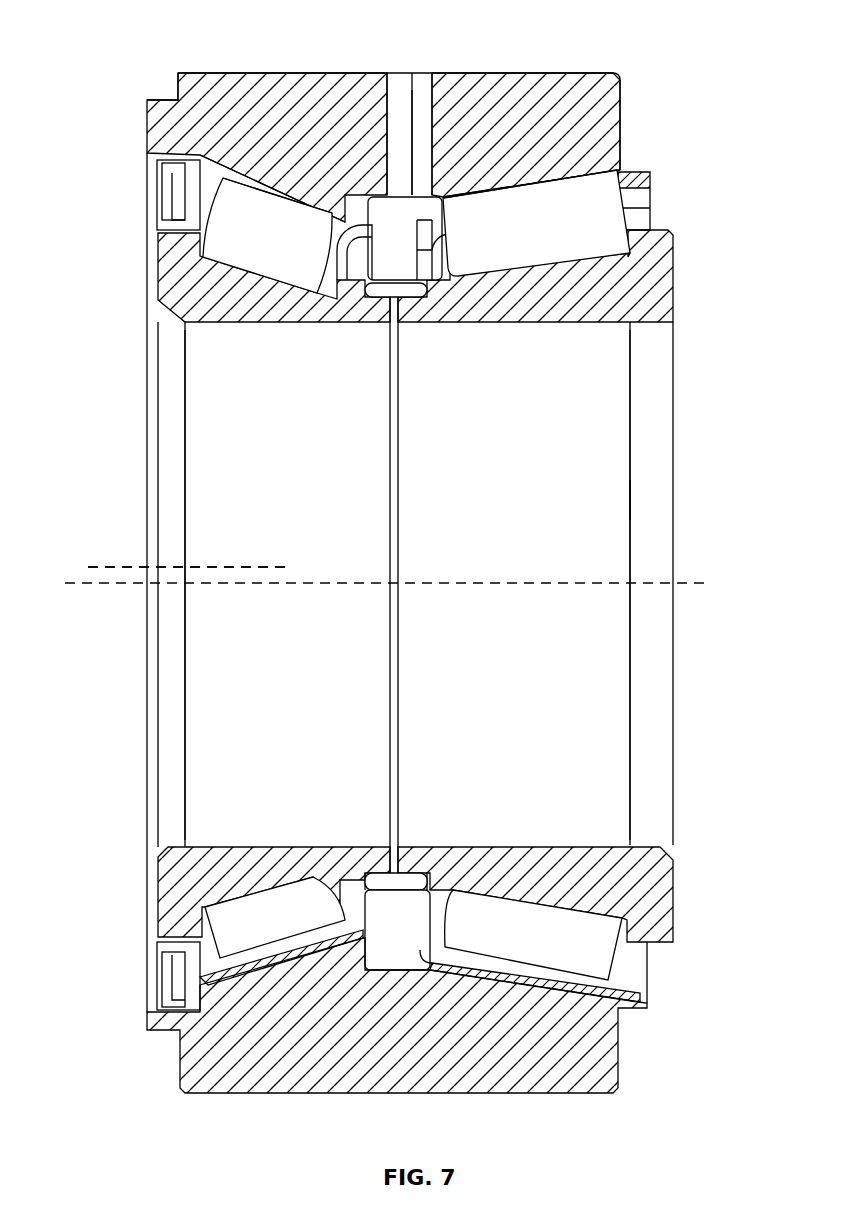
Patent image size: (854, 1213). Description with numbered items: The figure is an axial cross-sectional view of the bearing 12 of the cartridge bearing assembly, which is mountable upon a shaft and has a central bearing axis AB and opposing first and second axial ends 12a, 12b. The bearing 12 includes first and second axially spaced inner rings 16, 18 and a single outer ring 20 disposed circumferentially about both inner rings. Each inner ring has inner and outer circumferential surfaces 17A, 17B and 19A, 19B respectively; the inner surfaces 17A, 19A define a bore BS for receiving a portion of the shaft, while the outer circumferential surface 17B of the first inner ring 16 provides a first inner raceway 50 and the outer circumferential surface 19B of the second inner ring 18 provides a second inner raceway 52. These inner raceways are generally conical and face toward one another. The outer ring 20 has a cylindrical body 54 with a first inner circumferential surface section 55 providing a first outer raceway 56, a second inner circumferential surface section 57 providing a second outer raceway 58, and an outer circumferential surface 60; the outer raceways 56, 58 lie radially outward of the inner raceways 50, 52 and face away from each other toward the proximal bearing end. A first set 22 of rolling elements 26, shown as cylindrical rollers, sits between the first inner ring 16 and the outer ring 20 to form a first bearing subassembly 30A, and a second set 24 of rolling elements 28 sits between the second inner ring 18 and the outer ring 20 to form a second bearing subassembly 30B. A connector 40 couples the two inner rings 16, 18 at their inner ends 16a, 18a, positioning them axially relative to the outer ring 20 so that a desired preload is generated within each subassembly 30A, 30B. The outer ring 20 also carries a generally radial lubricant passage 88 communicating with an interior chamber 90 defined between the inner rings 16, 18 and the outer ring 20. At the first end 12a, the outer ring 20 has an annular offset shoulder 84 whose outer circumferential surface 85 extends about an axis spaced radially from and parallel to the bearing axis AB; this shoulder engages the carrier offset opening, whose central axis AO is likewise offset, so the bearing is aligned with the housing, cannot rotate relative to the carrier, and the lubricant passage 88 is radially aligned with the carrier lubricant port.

The outer ring 20 is at (218, 68).
The bearing 12 is at (119, 146).
The first axial end 12a is at (188, 82).
The second axial end 12b is at (611, 76).
The offset shoulder 84 is at (160, 128).
The outer circumferential surface 85 is at (166, 1033).
The first inner ring 16 is at (142, 269).
The inner end 16a is at (378, 872).
The second inner ring 18 is at (685, 275).
The inner end 18a is at (411, 872).
The first set of rolling elements 22 is at (254, 263).
The second set of rolling elements 24 is at (489, 261).
The rolling elements 26 is at (232, 231).
The rolling elements 28 is at (588, 183).
The first bearing subassembly 30A is at (197, 438).
The second bearing subassembly 30B is at (615, 431).
The connector 40 is at (392, 893).
The first inner raceway 50 is at (215, 909).
The second inner raceway 52 is at (579, 921).
The cylindrical body 54 is at (603, 124).
The first inner circumferential surface section 55 is at (284, 196).
The first outer raceway 56 is at (327, 216).
The second inner circumferential surface section 57 is at (546, 176).
The second outer raceway 58 is at (514, 197).
The outer circumferential surface 60 is at (544, 70).
The lubricant passage 88 is at (423, 119).
The interior chamber 90 is at (406, 280).
The inner circumferential surface 17A is at (305, 645).
The outer circumferential surface 17B is at (275, 917).
The inner circumferential surface 19A is at (565, 645).
The outer circumferential surface 19B is at (533, 935).
The central axis of offset opening AO is at (108, 567).
The bearing axis AB is at (689, 582).
The bore BS is at (596, 503).